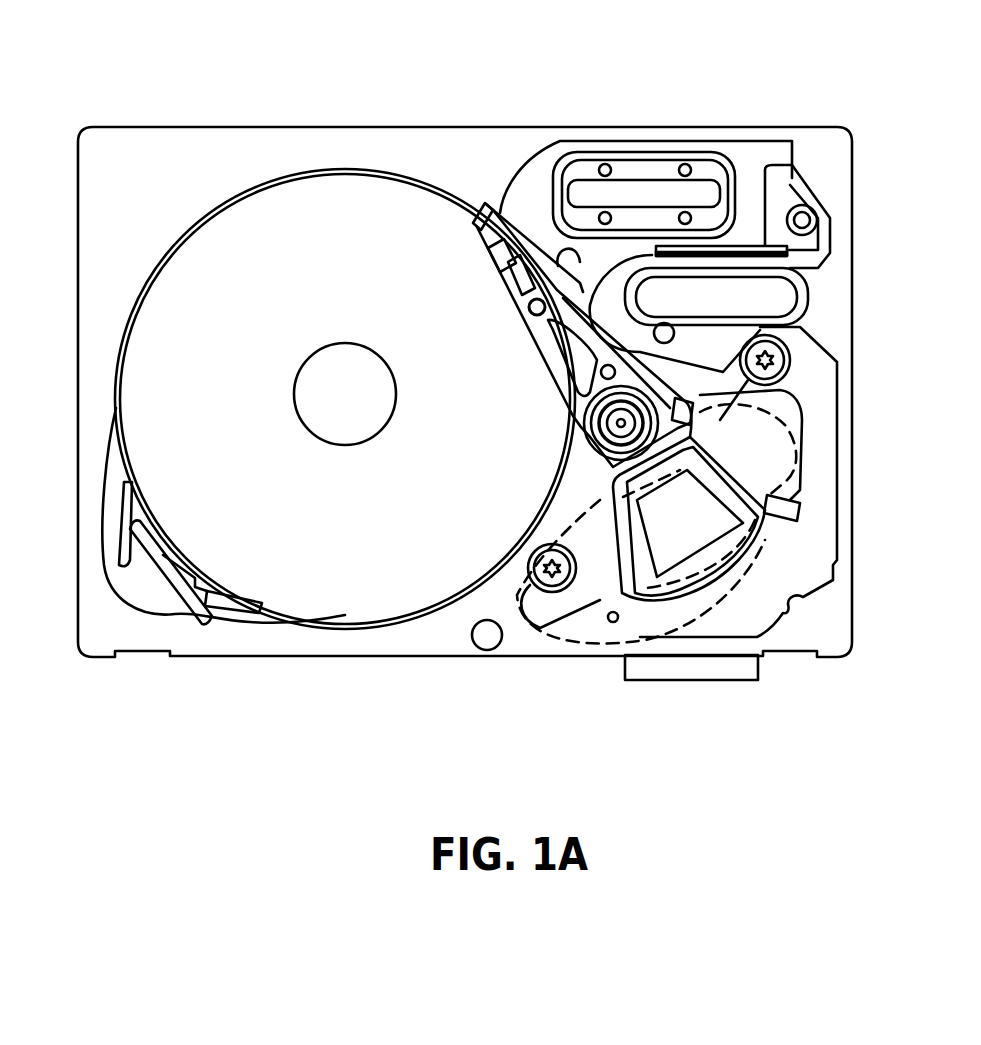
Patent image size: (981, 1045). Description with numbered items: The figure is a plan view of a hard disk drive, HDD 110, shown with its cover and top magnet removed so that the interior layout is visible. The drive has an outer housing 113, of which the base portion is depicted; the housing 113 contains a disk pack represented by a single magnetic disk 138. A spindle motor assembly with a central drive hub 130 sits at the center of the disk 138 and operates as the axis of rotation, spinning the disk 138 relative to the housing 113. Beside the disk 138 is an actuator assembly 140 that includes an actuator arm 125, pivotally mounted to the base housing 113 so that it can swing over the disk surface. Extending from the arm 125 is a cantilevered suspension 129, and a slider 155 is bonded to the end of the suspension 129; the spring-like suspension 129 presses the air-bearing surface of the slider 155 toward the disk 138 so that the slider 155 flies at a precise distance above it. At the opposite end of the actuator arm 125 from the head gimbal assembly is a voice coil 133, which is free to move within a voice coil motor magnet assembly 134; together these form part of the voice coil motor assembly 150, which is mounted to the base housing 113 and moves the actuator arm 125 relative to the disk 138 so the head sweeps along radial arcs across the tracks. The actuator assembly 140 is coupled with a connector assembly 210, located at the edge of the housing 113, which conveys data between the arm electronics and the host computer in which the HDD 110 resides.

The hard disk drive 110 is at (465, 339).
The housing 113 is at (465, 392).
The magnetic disk 138 is at (320, 169).
The central drive hub 130 is at (345, 394).
The slider 155 is at (474, 225).
The suspension 129 is at (495, 268).
The actuator arm 125 is at (540, 329).
The actuator assembly 140 is at (585, 447).
The voice coil motor magnet assembly 134 is at (835, 420).
The voice coil motor assembly 150 is at (780, 538).
The voice coil 133 is at (692, 413).
The connector assembly 210 is at (697, 680).